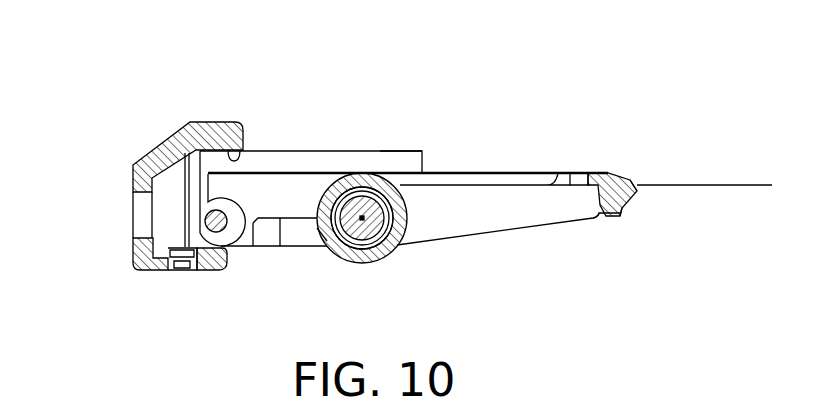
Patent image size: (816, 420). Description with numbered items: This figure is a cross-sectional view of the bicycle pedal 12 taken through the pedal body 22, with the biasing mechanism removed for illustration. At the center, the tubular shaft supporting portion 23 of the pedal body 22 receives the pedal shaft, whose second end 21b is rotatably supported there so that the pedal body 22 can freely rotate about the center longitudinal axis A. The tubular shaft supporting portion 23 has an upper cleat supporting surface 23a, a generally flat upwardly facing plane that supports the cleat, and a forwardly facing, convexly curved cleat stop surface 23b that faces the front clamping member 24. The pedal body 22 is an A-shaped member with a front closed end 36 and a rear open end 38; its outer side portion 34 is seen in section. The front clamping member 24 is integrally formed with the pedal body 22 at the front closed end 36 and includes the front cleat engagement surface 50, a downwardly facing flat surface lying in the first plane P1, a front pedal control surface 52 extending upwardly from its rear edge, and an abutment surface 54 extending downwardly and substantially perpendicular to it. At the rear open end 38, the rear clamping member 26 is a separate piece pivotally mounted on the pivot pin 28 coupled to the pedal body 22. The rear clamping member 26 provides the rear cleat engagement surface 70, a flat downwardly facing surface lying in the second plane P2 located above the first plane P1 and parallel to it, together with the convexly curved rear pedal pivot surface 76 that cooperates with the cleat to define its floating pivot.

The bicycle pedal 12 is at (592, 115).
The second end 21b is at (400, 237).
The pedal body 22 is at (464, 172).
The tubular shaft supporting portion 23 is at (385, 258).
The upper cleat supporting surface 23a is at (388, 172).
The cleat stop surface 23b is at (422, 173).
The front clamping member 24 is at (625, 171).
The rear clamping member 26 is at (148, 146).
The pivot pin 28 is at (224, 226).
The outer side portion 34 is at (522, 212).
The front closed end 36 is at (612, 220).
The rear open end 38 is at (258, 250).
The front cleat engagement surface 50 is at (637, 193).
The front pedal control surface 52 is at (572, 172).
The abutment surface 54 is at (595, 222).
The rear cleat engagement surface 70 is at (258, 148).
The rear pedal pivot surface 76 is at (247, 148).
The first plane P1 is at (720, 185).
The second plane P2 is at (393, 148).
The center longitudinal axis A is at (327, 241).